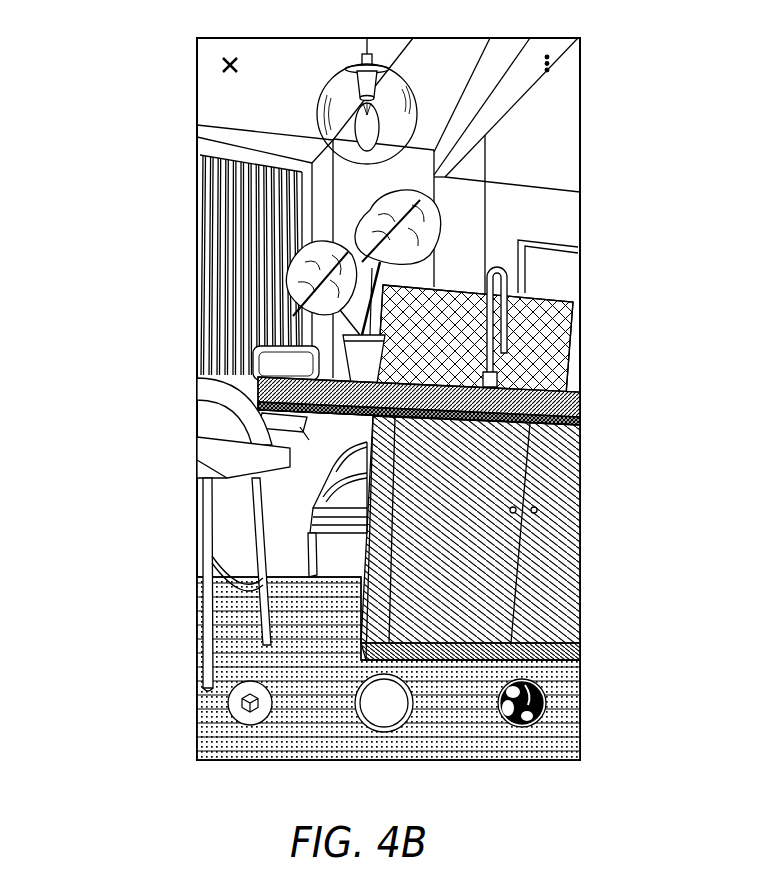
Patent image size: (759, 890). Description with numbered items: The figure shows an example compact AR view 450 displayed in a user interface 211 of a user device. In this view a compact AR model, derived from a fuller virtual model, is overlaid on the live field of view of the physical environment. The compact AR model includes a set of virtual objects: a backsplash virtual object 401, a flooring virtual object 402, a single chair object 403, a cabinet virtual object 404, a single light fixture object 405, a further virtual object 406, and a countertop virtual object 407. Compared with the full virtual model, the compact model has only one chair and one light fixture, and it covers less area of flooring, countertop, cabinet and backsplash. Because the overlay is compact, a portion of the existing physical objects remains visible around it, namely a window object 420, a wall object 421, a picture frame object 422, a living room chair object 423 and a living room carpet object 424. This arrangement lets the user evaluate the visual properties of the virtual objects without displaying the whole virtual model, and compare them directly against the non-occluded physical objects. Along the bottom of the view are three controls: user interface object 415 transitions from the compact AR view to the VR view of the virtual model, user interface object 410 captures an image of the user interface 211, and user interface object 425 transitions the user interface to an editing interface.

The compact AR view 450 is at (253, 28).
The user interface 211 is at (388, 399).
The backsplash virtual object 401 is at (547, 334).
The flooring virtual object 402 is at (297, 662).
The chair object 403 is at (208, 422).
The cabinet virtual object 404 is at (499, 449).
The light fixture object 405 is at (382, 124).
The virtual object 406 is at (537, 393).
The countertop virtual object 407 is at (280, 376).
The user interface object 410 is at (384, 716).
The user interface object 415 is at (249, 719).
The window object 420 is at (232, 247).
The wall object 421 is at (492, 222).
The picture frame object 422 is at (562, 253).
The living room chair object 423 is at (302, 502).
The living room carpet object 424 is at (292, 550).
The user interface object 425 is at (522, 718).